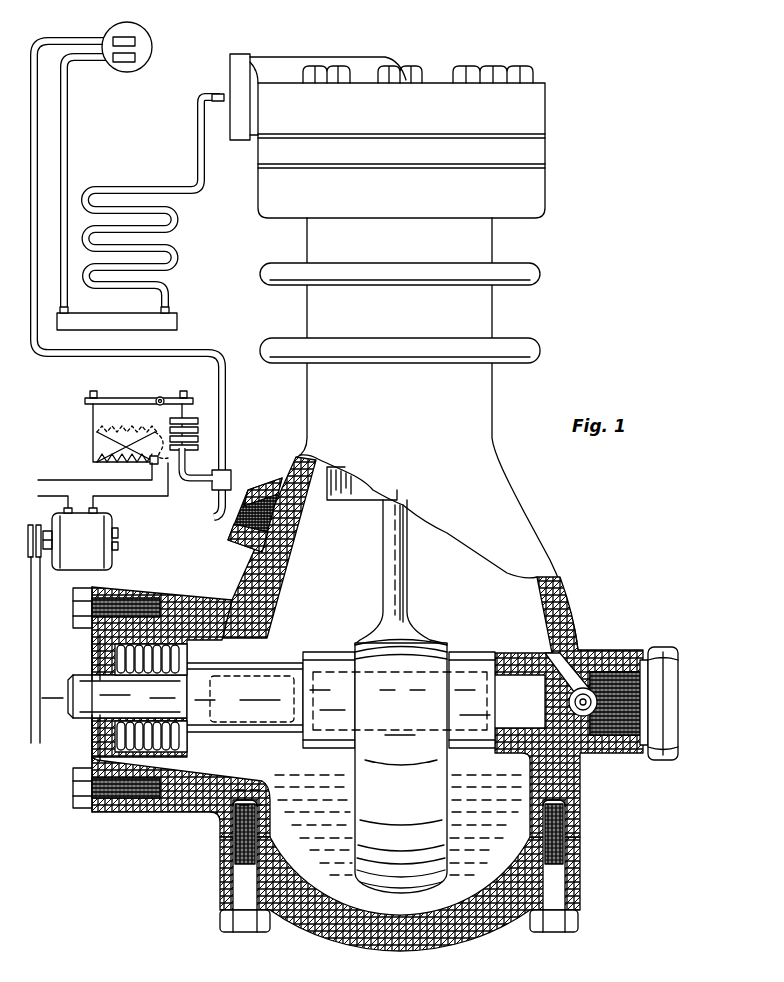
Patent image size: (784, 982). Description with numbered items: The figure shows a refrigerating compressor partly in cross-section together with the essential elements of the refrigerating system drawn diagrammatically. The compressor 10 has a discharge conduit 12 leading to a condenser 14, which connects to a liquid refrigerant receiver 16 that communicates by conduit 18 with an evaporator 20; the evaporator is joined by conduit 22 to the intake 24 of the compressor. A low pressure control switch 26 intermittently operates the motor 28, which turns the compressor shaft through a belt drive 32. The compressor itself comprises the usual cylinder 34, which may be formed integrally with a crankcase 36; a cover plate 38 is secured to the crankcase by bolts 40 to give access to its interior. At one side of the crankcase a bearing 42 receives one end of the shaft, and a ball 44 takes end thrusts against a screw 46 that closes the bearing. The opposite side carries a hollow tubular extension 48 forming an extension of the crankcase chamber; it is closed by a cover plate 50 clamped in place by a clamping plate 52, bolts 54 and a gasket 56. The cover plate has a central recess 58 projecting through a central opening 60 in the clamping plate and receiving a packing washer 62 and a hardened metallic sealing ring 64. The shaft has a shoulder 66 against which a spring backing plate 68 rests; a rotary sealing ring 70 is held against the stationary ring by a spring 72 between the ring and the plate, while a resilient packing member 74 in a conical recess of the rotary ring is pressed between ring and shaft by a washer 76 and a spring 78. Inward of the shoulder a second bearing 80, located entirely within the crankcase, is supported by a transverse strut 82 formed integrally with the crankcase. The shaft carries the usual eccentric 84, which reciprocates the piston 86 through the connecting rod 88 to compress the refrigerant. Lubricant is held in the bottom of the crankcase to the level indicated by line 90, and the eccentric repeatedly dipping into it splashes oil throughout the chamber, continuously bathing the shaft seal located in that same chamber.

The compressor 10 is at (525, 197).
The discharge conduit 12 is at (154, 187).
The condenser 14 is at (160, 245).
The liquid refrigerant receiver 16 is at (176, 323).
The conduit 18 is at (68, 170).
The evaporator 20 is at (142, 45).
The conduit 22 is at (100, 356).
The intake 24 is at (248, 492).
The low pressure control switch 26 is at (95, 440).
The motor 28 is at (95, 545).
The belt drive 32 is at (37, 622).
The cylinder 34 is at (498, 394).
The crankcase 36 is at (562, 604).
The cover plate 38 is at (582, 860).
The bolts 40 is at (580, 921).
The bearing 42 is at (512, 660).
The ball 44 is at (592, 690).
The screw 46 is at (622, 700).
The tubular extension 48 is at (196, 800).
The cover plate 50 is at (99, 812).
The clamping plate 52 is at (90, 752).
The bolts 54 is at (73, 787).
The gasket 56 is at (112, 770).
The recess 58 is at (110, 642).
The central opening 60 is at (95, 742).
The packing washer 62 is at (98, 650).
The sealing ring 64 is at (90, 700).
The shoulder 66 is at (212, 686).
The spring backing plate 68 is at (190, 672).
The rotary sealing ring 70 is at (130, 648).
The spring 72 is at (160, 790).
The resilient packing member 74 is at (160, 662).
The washer 76 is at (233, 618).
The spring 78 is at (272, 650).
The second bearing 80 is at (270, 652).
The transverse strut 82 is at (268, 756).
The eccentric 84 is at (462, 770).
The piston 86 is at (357, 488).
The connecting rod 88 is at (412, 576).
The line 90 is at (258, 784).